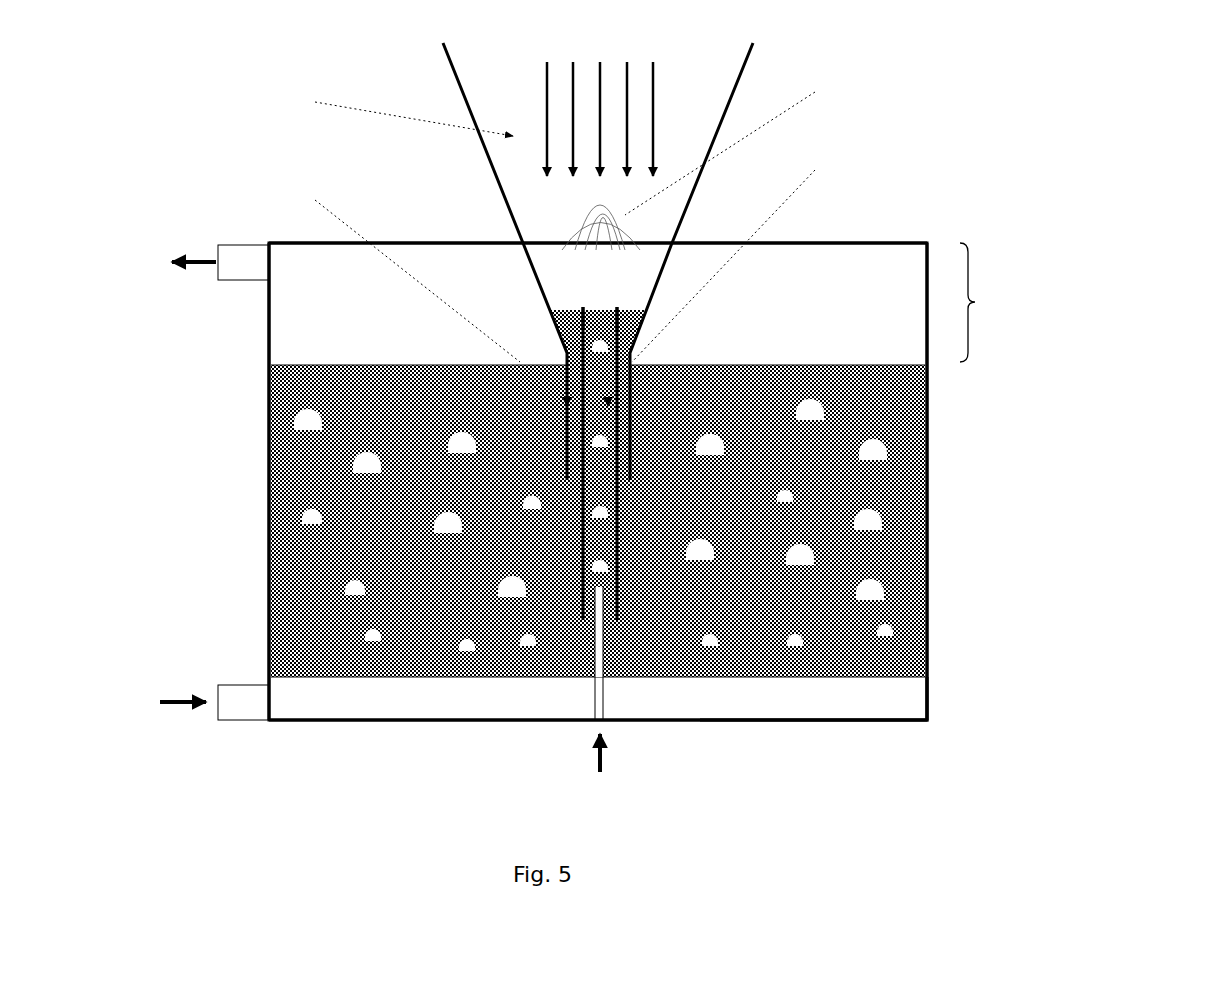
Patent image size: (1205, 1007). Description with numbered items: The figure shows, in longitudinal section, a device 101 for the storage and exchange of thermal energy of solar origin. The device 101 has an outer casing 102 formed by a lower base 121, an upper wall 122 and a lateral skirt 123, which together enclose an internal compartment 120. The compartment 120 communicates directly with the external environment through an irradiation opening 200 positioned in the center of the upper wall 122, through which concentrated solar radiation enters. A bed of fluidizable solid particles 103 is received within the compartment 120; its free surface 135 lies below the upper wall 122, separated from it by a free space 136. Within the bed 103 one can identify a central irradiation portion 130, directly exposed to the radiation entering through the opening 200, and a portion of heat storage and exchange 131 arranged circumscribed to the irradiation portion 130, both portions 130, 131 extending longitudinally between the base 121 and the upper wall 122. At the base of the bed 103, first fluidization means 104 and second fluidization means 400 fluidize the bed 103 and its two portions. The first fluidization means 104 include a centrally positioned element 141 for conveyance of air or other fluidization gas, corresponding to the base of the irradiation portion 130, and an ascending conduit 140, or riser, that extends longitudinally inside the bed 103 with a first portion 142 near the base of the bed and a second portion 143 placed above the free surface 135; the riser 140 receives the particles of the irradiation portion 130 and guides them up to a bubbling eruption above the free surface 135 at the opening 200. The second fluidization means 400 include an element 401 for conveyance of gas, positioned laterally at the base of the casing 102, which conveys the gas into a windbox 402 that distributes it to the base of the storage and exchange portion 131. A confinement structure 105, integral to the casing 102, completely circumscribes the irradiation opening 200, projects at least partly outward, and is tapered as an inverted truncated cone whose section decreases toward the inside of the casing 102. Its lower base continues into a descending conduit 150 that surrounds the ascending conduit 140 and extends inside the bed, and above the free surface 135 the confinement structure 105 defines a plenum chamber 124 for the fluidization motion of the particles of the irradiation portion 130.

The device for the storage and/or exchange of thermal energy of solar origin 101 is at (1133, 86).
The outer casing 102 is at (266, 446).
The bed of fluidizable solid particles 103 is at (291, 492).
The first fluidization means 104 is at (575, 729).
The confinement structure 105 is at (737, 91).
The internal compartment 120 is at (283, 348).
The lower base 121 is at (932, 722).
The upper wall 122 is at (925, 241).
The lateral skirt 123 is at (932, 450).
The plenum chamber 124 is at (586, 292).
The irradiation portion 130 is at (607, 495).
The portion of heat storage and/or exchange 131 is at (440, 582).
The free surface 135 is at (406, 366).
The free space 136 is at (654, 302).
The ascending conduit 140 is at (731, 387).
The element for conveyance of air or other fluidization gas 141 is at (665, 694).
The first portion of the ascending conduit 142 is at (654, 468).
The second portion of the ascending conduit 143 is at (606, 309).
The descending conduit 150 is at (698, 424).
The irradiation opening 200 is at (549, 233).
The second fluidization means 400 is at (256, 728).
The element for conveyance of air or other fluidization gas 401 is at (145, 674).
The windbox 402 is at (774, 706).